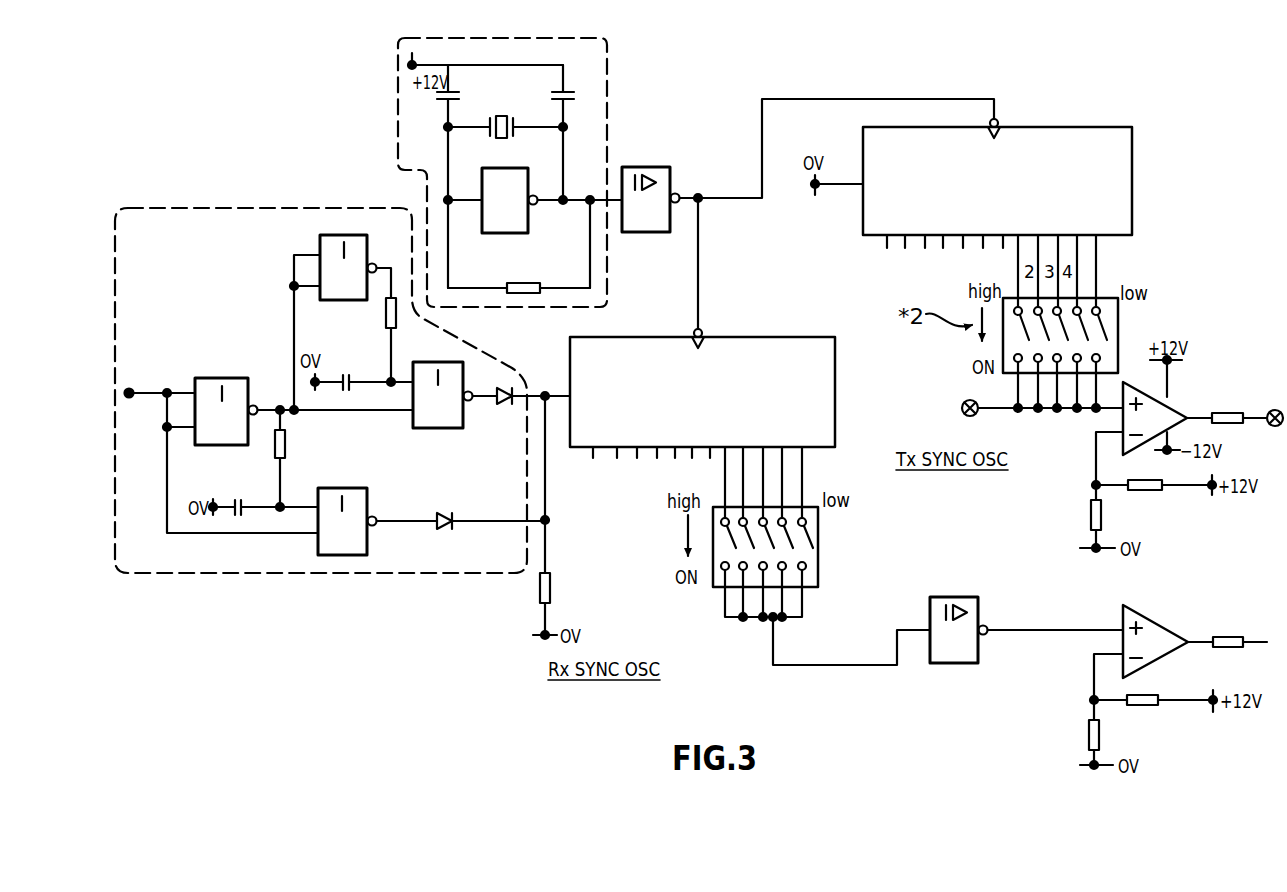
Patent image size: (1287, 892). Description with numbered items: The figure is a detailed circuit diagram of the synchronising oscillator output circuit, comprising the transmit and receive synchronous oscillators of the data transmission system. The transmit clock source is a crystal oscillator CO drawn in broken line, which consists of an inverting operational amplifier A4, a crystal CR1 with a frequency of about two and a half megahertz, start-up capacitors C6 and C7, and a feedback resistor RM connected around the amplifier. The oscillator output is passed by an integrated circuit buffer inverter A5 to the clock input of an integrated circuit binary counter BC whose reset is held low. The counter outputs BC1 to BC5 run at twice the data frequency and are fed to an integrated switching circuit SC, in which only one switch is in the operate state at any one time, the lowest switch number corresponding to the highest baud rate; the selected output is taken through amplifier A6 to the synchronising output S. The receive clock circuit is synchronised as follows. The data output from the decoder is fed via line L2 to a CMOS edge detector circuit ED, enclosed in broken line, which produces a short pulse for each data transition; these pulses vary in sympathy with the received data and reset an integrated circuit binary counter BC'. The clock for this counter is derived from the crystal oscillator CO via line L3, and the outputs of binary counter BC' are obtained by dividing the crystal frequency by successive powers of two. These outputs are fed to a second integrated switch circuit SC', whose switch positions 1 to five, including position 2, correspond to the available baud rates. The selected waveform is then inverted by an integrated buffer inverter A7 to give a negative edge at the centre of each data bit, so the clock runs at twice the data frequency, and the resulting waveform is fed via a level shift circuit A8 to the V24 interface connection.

The crystal oscillator CO is at (607, 52).
The CMOS edge detector circuit ED is at (210, 205).
The start-up capacitor C6 is at (454, 96).
The start-up capacitor C7 is at (555, 96).
The crystal CR1 is at (505, 133).
The inverting operational amplifier A4 is at (528, 222).
The feedback resistor RM is at (519, 278).
The integrated circuit buffer inverter A5 is at (633, 232).
The line L3 is at (712, 263).
The line L2 is at (145, 407).
The integrated circuit binary counter BC' is at (702, 393).
The second integrated switch circuit SC' is at (789, 547).
The integrated buffer inverter A7 is at (959, 630).
The integrated circuit binary counter BC is at (997, 187).
The counter output BC1 is at (1003, 271).
The counter output BC5 is at (1113, 271).
The integrated switching circuit SC is at (1007, 339).
The sync signal terminal S is at (962, 409).
The comparator amplifier A6 is at (1155, 418).
The level shift circuit A8 is at (1155, 641).
The switch position 1 is at (1227, 632).
The switch position 2 is at (680, 533).